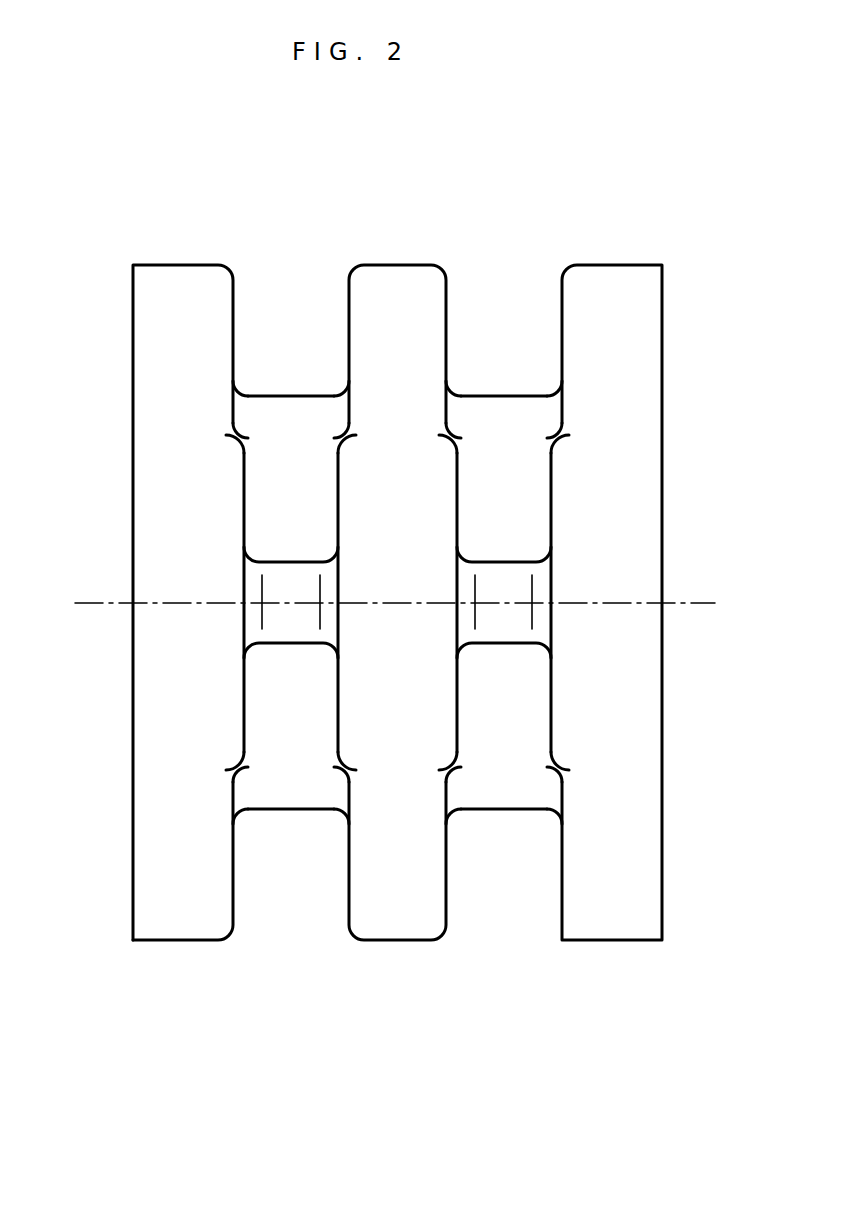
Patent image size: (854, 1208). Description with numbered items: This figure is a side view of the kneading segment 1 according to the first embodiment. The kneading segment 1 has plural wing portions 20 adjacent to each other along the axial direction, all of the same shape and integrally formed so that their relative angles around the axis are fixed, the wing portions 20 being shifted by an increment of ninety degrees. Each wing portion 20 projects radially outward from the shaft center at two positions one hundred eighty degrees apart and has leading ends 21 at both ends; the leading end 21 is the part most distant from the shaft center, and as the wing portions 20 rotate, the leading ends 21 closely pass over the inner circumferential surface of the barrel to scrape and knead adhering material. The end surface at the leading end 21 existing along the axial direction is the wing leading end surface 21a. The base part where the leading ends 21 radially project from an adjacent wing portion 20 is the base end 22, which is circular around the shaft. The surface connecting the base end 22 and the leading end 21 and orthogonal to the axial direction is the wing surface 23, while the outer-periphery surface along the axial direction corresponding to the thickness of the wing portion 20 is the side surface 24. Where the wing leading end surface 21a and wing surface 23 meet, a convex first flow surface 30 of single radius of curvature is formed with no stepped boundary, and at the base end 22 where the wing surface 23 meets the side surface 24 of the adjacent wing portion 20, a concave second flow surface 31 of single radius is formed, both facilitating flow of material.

The kneading segment 1 is at (250, 165).
The wing portion 20 is at (242, 470).
The leading end 21 is at (130, 263).
The wing leading end surface 21a is at (178, 264).
The base end 22 is at (233, 420).
The wing surface 23 is at (235, 320).
The side surface 24 is at (291, 395).
The first flow surface 30 is at (231, 266).
The second flow surface 31 is at (240, 395).